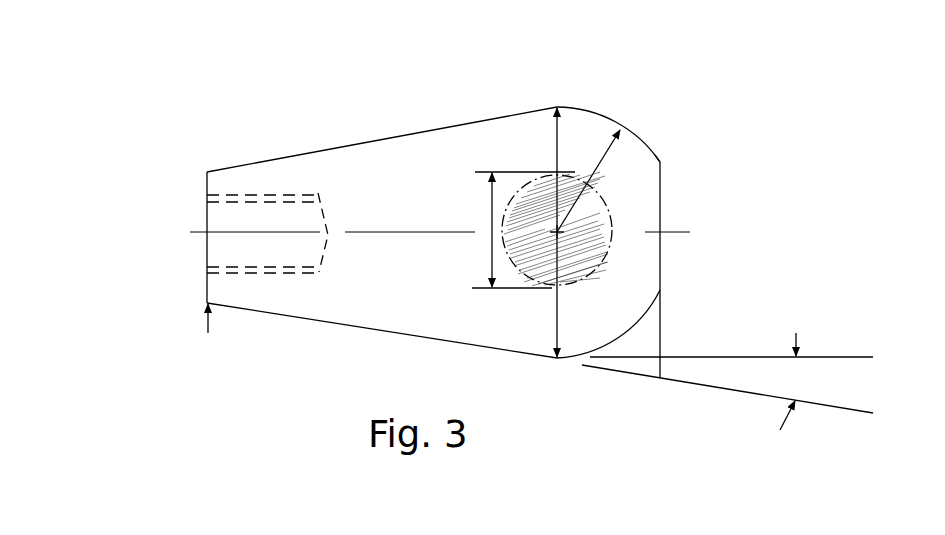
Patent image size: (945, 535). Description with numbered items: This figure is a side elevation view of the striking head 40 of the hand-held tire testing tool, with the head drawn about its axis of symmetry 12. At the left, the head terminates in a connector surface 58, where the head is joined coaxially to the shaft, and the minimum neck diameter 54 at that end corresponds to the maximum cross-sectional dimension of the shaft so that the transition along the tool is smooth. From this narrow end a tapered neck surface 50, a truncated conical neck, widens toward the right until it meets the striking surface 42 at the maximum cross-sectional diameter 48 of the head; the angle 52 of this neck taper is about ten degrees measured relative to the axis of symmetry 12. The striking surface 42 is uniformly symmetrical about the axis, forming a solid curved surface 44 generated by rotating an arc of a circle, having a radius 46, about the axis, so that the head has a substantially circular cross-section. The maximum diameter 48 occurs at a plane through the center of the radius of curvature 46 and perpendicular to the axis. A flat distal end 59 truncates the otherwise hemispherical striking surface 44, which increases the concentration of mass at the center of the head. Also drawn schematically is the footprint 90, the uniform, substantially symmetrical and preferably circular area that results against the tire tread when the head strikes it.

The axis of symmetry 12 is at (645, 231).
The striking head 40 is at (375, 90).
The striking surface 42 is at (575, 108).
The curved surface 44 is at (632, 125).
The radius 46 is at (660, 163).
The maximum cross-sectional diameter 48 is at (553, 316).
The tapered neck surface 50 is at (352, 330).
The angle 52 is at (784, 418).
The minimum neck diameter 54 is at (207, 171).
The connector surface 58 is at (205, 186).
The flat distal end 59 is at (660, 288).
The footprint 90 is at (522, 214).